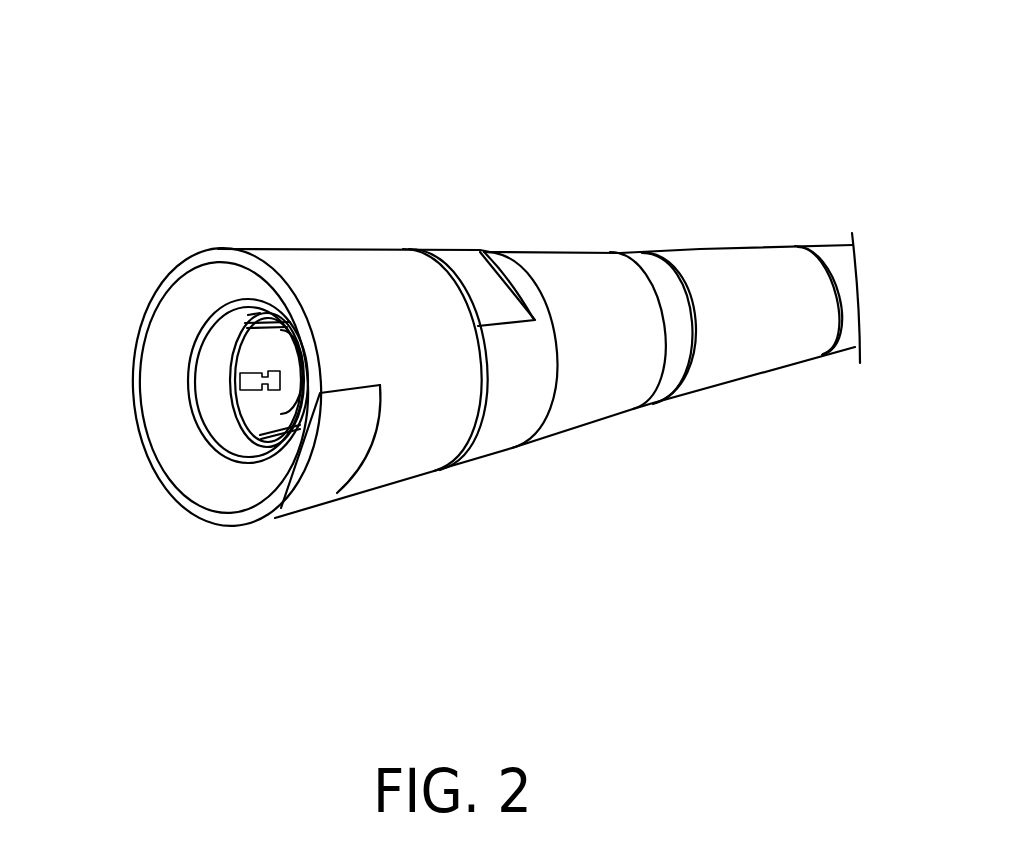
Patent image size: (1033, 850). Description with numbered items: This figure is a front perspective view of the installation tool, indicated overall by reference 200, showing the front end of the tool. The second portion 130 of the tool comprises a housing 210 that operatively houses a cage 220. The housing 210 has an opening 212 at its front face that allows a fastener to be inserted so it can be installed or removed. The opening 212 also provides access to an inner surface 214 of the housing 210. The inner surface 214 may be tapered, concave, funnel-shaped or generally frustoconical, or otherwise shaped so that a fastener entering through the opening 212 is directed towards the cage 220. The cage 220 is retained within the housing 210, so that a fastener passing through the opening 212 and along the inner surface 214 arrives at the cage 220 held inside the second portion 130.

The connector assembly 200 is at (622, 73).
The second portion 130 is at (392, 462).
The housing 210 is at (209, 355).
The opening 212 is at (172, 270).
The inner surface 214 is at (172, 460).
The cage 220 is at (248, 353).